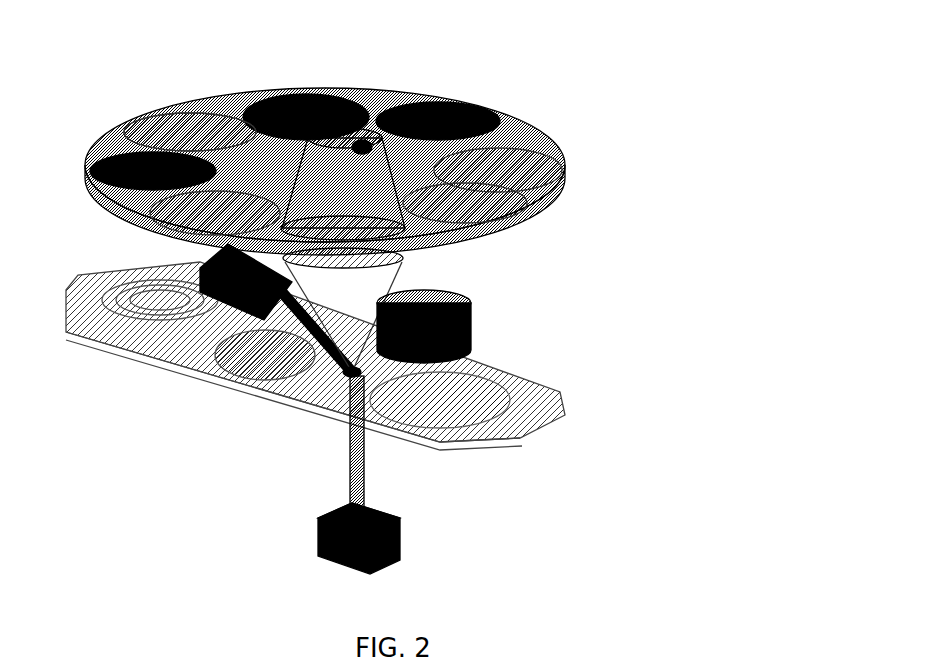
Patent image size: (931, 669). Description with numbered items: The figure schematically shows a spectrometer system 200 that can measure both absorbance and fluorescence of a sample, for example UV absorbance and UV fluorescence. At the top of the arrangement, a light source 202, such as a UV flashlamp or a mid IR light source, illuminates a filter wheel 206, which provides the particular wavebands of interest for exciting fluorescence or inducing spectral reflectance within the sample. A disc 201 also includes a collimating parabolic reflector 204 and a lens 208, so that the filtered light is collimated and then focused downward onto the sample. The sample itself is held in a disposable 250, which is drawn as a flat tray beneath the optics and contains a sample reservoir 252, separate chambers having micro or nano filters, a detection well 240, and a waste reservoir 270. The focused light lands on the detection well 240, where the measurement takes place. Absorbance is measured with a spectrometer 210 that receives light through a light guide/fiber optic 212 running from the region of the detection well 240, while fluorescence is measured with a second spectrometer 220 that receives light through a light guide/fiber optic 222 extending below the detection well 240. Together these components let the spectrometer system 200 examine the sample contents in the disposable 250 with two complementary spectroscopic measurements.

The spectrometer system 200 is at (353, 21).
The disc 201 is at (209, 145).
The light source 202 is at (376, 149).
The collimating parabolic reflector 204 is at (388, 182).
The filter wheel 206 is at (403, 231).
The lens 208 is at (408, 254).
The spectrometer 210 is at (212, 280).
The light guide/fiber optic 212 is at (312, 348).
The spectrometer 220 is at (403, 528).
The light guide/fiber optic 222 is at (365, 453).
The detection well 240 is at (362, 369).
The disposable 250 is at (140, 278).
The sample reservoir 252 is at (470, 356).
The waste reservoir 270 is at (293, 348).